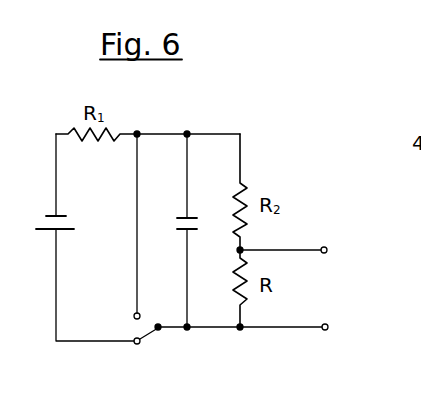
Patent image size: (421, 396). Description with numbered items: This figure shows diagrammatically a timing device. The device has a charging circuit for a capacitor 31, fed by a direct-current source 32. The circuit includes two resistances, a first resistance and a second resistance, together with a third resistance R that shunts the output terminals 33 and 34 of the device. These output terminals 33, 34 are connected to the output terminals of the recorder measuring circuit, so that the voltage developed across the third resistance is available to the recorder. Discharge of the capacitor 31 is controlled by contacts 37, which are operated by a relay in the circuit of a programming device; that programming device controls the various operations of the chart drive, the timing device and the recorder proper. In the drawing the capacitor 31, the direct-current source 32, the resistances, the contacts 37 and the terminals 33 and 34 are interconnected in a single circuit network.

The capacitor 31 is at (189, 216).
The battery 32 is at (38, 231).
The output terminal 33 is at (327, 247).
The output terminal 34 is at (328, 328).
The switch 37 is at (147, 321).